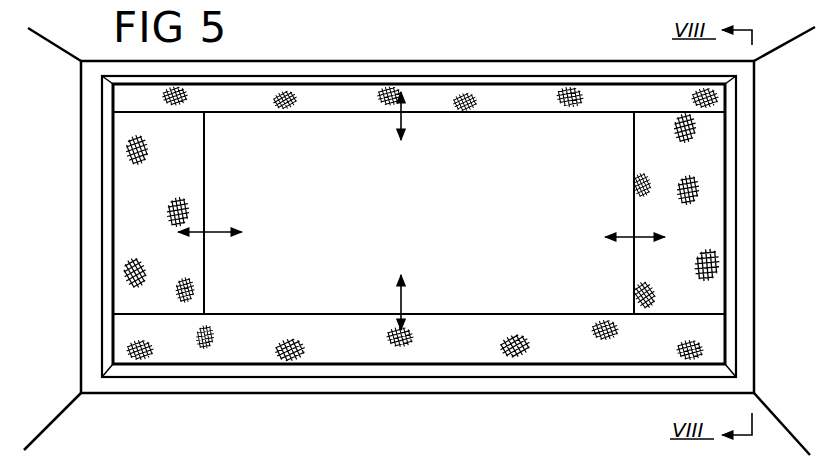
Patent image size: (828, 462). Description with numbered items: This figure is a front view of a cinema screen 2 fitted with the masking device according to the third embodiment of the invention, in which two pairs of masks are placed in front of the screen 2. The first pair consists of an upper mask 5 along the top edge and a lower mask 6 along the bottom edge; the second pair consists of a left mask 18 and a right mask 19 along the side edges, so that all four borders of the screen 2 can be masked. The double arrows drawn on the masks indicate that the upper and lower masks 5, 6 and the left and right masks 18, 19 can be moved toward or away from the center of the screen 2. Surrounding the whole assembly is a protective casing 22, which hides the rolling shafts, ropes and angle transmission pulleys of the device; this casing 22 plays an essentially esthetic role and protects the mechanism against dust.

The screen 2 is at (467, 230).
The upper mask 5 is at (321, 104).
The lower mask 6 is at (349, 355).
The left mask 18 is at (180, 196).
The right mask 19 is at (672, 175).
The protective casing 22 is at (298, 387).